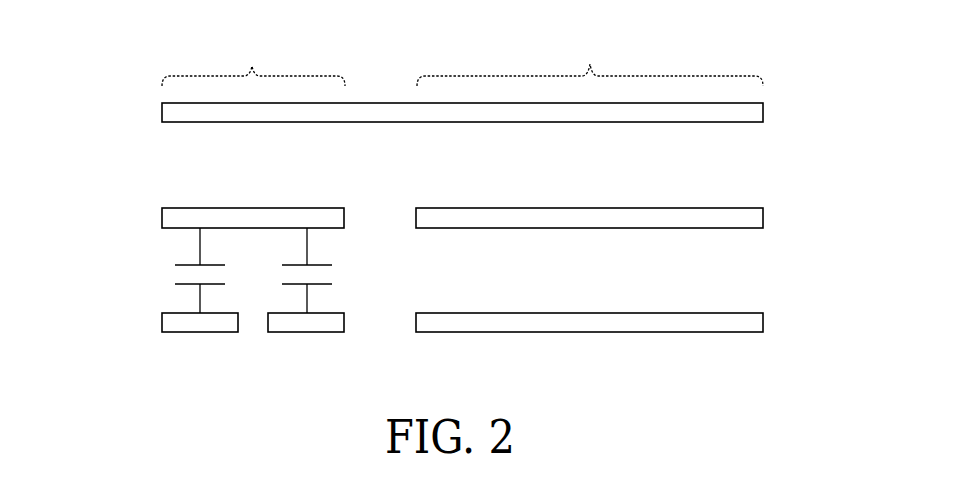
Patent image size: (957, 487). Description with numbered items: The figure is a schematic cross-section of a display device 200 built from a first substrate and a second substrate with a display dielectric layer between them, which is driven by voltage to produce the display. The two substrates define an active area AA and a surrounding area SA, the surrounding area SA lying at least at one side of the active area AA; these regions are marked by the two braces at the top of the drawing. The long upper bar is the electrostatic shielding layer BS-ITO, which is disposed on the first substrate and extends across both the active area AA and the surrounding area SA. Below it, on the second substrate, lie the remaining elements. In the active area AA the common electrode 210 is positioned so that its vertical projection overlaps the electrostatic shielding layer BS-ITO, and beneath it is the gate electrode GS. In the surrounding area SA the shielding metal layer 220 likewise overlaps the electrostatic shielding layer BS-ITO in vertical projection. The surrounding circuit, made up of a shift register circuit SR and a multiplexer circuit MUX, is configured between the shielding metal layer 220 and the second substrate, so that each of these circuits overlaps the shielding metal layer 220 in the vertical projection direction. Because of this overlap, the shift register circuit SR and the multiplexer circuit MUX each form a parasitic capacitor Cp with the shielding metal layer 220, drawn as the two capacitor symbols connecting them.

The display device 200 is at (462, 237).
The common electrode 210 is at (765, 219).
The shielding metal layer 220 is at (162, 216).
The electrostatic shielding layer BS-ITO is at (162, 112).
The surrounding area SA is at (253, 59).
The active area AA is at (590, 59).
The parasitic capacitor Cp is at (253, 270).
The shift register circuit SR is at (163, 332).
The multiplexer circuit MUX is at (344, 332).
The gate electrode GS is at (764, 331).